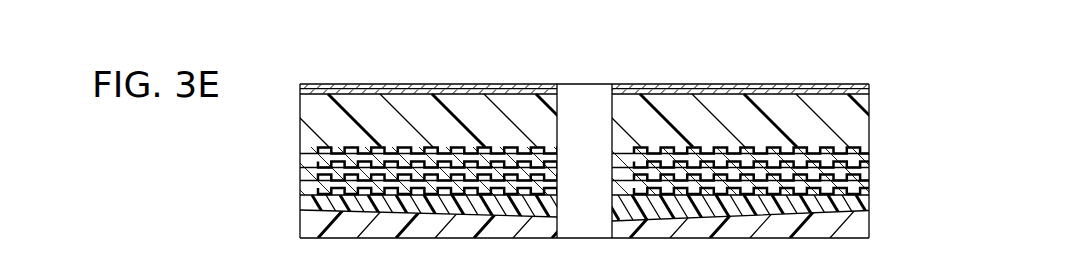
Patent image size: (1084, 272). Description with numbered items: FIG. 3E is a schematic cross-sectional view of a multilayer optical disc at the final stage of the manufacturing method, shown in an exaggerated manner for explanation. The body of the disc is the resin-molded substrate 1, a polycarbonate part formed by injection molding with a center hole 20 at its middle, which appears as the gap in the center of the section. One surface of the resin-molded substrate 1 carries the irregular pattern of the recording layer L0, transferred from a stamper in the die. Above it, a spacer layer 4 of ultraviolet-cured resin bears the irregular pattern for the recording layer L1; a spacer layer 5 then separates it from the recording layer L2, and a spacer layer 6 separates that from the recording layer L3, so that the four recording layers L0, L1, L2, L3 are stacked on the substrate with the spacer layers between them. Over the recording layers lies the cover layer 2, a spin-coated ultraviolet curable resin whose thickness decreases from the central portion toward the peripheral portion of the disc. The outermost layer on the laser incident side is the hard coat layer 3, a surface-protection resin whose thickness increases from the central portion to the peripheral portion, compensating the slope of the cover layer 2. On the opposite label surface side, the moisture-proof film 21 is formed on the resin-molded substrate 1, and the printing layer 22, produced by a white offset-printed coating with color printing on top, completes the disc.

The resin-molded substrate 1 is at (869, 121).
The cover layer 2 is at (869, 200).
The hard coat layer 3 is at (869, 225).
The spacer layer 4 is at (869, 153).
The spacer layer 5 is at (869, 166).
The spacer layer 6 is at (869, 183).
The center hole 20 is at (566, 106).
The moisture-proof film 21 is at (823, 86).
The printing layer 22 is at (851, 92).
The recording layer L0 is at (300, 150).
The recording layer L1 is at (300, 163).
The recording layer L2 is at (300, 177).
The recording layer L3 is at (300, 191).